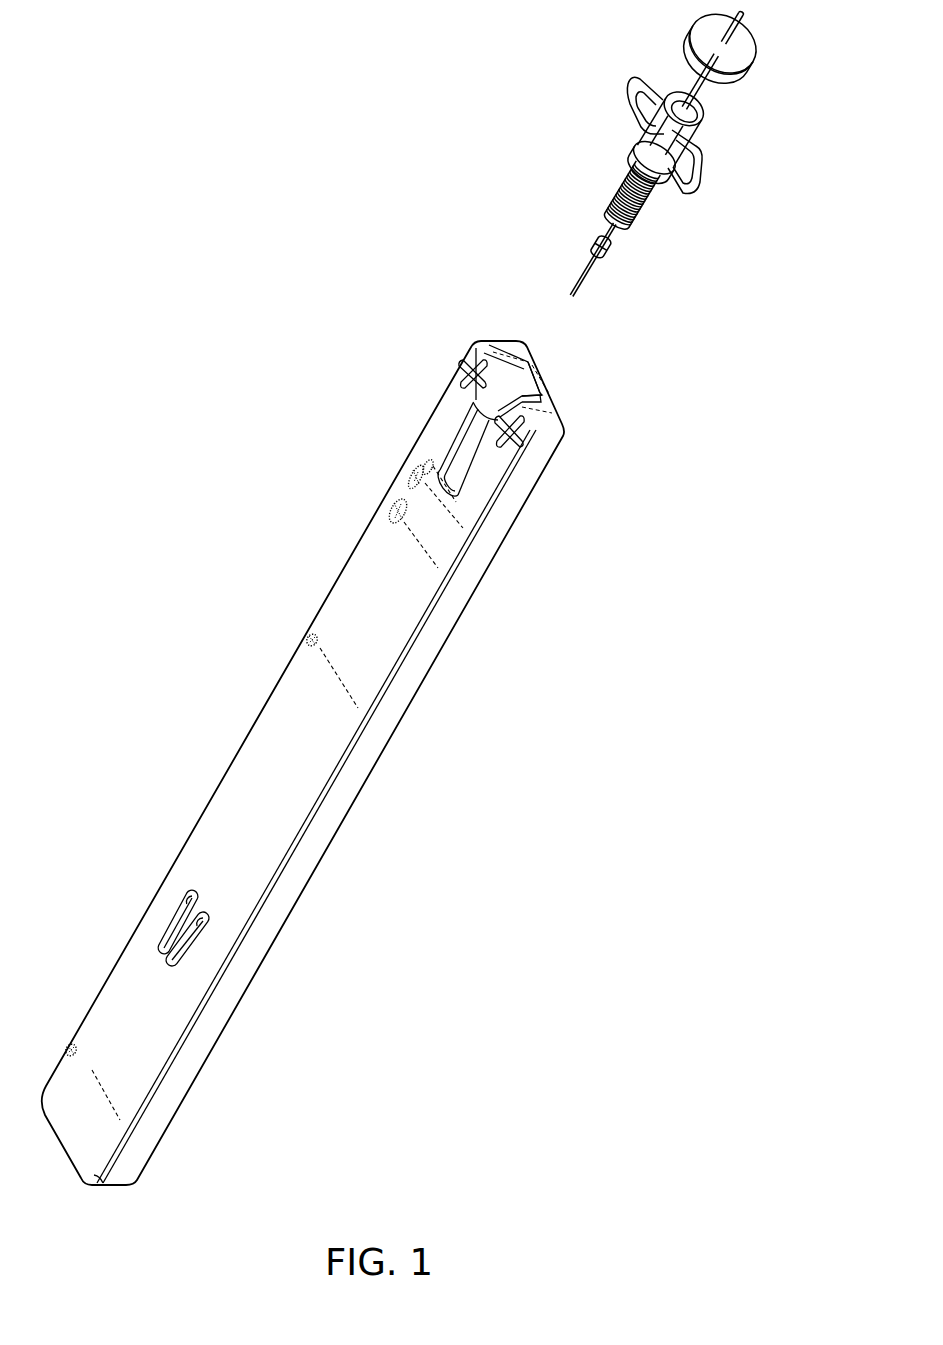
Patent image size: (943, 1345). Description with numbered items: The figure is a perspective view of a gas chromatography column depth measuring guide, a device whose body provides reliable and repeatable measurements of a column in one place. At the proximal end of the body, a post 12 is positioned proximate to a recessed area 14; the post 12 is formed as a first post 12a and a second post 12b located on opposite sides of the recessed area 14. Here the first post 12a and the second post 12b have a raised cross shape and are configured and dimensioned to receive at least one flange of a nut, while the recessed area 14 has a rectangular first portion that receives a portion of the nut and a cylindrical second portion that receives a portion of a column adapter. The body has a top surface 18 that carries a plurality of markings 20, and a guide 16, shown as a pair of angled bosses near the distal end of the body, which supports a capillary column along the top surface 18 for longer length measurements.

The post 12 is at (479, 356).
The first post 12a is at (463, 363).
The second post 12b is at (524, 430).
The recessed area 14 is at (524, 384).
The guide 16 is at (168, 917).
The top surface 18 is at (230, 764).
The markings 20 is at (397, 505).